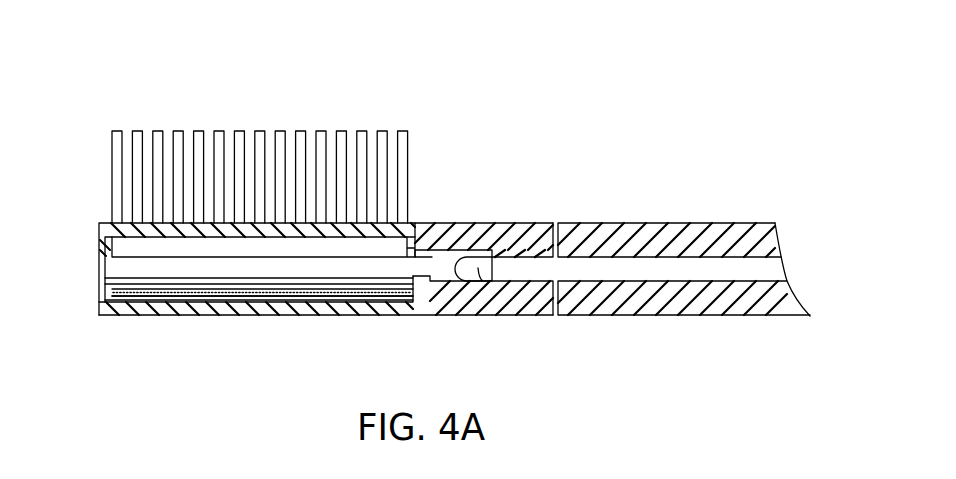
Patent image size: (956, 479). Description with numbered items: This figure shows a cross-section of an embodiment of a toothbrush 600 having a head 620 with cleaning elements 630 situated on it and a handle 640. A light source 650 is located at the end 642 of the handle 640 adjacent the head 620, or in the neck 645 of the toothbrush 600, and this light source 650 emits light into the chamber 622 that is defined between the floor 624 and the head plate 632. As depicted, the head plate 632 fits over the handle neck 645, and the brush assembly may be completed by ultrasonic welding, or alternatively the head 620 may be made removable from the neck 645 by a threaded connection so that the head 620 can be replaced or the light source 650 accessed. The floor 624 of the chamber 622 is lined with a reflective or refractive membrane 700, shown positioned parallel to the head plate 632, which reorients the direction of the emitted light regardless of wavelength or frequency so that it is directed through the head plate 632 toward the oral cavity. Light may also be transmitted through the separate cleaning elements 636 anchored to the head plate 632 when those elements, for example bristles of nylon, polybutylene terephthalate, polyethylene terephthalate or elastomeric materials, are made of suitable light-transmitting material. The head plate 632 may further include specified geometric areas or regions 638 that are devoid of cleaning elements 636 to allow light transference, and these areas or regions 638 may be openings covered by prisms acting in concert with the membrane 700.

The toothbrush 600 is at (598, 146).
The head 620 is at (135, 316).
The chamber 622 is at (127, 272).
The floor 624 is at (335, 300).
The cleaning elements 630 is at (370, 67).
The head plate 632 is at (100, 228).
The cleaning elements 636 is at (112, 175).
The areas or regions 638 is at (262, 230).
The handle 640 is at (753, 223).
The end 642 is at (427, 252).
The neck 645 is at (520, 223).
The light source 650 is at (482, 283).
The reflective or refractive membrane 700 is at (263, 299).